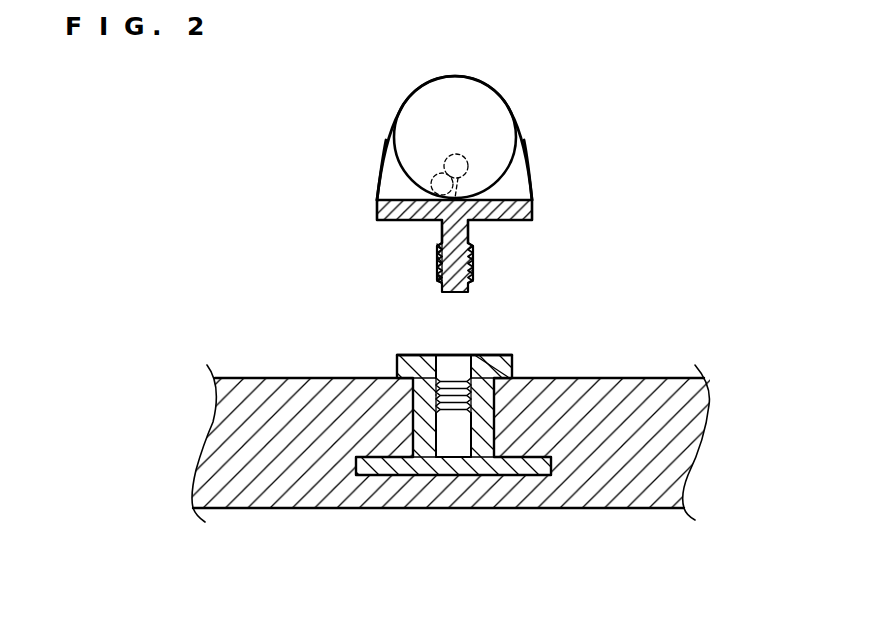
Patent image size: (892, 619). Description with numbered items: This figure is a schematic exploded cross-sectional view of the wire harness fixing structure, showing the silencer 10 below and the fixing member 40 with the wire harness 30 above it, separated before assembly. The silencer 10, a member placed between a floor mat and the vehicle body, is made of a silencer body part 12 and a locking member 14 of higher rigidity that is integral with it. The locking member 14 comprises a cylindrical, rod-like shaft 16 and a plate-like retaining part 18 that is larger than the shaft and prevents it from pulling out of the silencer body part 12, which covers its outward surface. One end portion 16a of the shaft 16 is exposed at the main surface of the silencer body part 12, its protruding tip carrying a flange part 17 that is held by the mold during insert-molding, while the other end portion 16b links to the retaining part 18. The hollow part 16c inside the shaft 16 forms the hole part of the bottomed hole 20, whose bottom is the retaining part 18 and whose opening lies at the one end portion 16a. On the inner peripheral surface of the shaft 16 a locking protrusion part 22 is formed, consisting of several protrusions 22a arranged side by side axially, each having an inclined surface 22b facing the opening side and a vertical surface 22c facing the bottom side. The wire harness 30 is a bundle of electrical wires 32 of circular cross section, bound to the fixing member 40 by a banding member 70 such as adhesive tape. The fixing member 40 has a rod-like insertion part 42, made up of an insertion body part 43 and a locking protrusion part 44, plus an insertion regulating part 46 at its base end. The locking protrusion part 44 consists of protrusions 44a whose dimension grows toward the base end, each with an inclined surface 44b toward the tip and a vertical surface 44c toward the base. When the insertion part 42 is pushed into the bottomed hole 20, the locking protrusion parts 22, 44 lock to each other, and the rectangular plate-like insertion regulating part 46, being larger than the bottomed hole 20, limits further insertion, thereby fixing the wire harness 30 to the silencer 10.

The silencer 10 is at (263, 367).
The silencer body part 12 is at (610, 498).
The locking member 14 is at (493, 351).
The shaft 16 is at (443, 445).
The one end portion of the shaft 16a is at (424, 366).
The other end portion of the shaft 16b is at (425, 440).
The hollow part 16c is at (452, 452).
The flange part 17 is at (410, 380).
The retaining part 18 is at (378, 468).
The bottomed hole 20 is at (455, 350).
The locking protrusion part 22 is at (522, 425).
The protrusion 22a is at (502, 364).
The inclined surface 22b is at (465, 372).
The vertical surface 22c is at (456, 450).
The wire harness 30 is at (508, 172).
The electrical wires 32 is at (470, 190).
The fixing member 40 is at (398, 196).
The insertion part 42 is at (475, 262).
The insertion body part 43 is at (462, 258).
The locking protrusion part 44 is at (478, 272).
The protrusion 44a is at (438, 262).
The inclined surface 44b is at (439, 281).
The vertical surface 44c is at (439, 245).
The insertion regulating part 46 is at (531, 209).
The banding member 70 is at (383, 166).